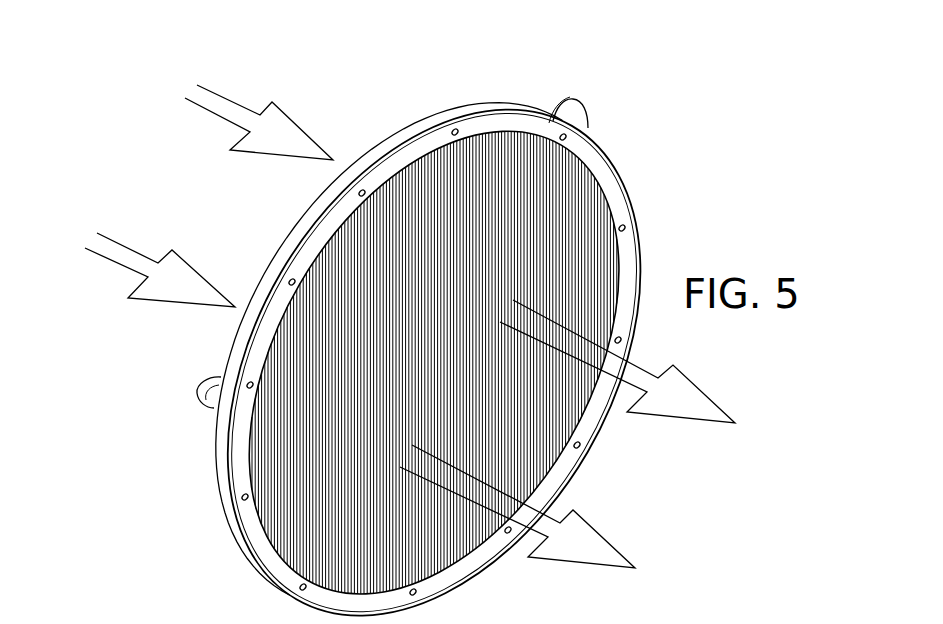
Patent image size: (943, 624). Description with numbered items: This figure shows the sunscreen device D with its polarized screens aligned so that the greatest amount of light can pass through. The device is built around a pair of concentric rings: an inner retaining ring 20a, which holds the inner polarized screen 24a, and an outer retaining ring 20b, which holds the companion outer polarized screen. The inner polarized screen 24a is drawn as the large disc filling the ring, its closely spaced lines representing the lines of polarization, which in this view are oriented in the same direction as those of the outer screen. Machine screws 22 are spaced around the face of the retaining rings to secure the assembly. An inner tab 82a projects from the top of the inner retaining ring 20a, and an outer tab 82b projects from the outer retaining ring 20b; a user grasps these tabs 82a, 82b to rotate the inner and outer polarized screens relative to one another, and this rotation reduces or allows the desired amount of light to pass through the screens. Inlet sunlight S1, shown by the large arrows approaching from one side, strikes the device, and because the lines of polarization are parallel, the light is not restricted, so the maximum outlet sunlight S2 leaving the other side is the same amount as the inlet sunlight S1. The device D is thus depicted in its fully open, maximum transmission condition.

The inner retaining ring 20a is at (595, 160).
The outer retaining ring 20b is at (232, 347).
The machine screw 22 is at (626, 228).
The inner polarized screen 24a is at (585, 203).
The inner tab 82a is at (578, 113).
The outer tab 82b is at (211, 402).
The inlet sunlight S1 is at (253, 147).
The maximum outlet sunlight S2 is at (682, 410).
The sunscreen device D is at (140, 524).